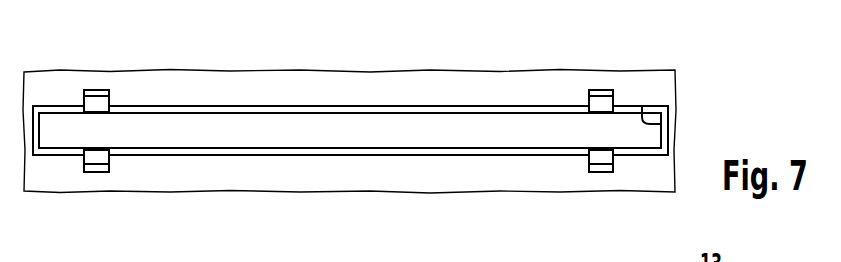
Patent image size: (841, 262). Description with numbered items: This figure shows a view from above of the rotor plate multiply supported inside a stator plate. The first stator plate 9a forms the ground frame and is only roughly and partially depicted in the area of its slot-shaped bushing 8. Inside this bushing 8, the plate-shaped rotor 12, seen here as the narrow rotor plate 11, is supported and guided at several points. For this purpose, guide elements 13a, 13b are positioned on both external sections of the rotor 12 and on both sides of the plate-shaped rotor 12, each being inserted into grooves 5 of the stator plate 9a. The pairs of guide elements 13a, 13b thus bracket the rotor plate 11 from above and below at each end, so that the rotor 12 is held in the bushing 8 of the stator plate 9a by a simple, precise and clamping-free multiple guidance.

The groove 5 is at (96, 90).
The bushing 8 is at (661, 124).
The first stator plate 9a is at (62, 85).
The rotor plate 11 is at (288, 130).
The rotor 12 is at (424, 112).
The guide element 13a is at (600, 104).
The guide element 13b is at (97, 104).